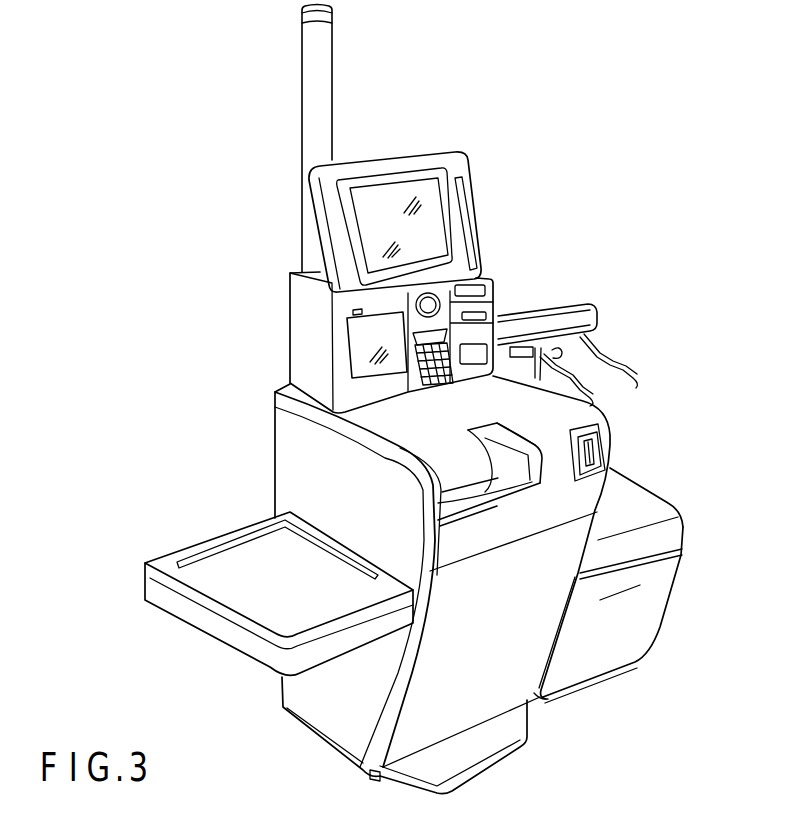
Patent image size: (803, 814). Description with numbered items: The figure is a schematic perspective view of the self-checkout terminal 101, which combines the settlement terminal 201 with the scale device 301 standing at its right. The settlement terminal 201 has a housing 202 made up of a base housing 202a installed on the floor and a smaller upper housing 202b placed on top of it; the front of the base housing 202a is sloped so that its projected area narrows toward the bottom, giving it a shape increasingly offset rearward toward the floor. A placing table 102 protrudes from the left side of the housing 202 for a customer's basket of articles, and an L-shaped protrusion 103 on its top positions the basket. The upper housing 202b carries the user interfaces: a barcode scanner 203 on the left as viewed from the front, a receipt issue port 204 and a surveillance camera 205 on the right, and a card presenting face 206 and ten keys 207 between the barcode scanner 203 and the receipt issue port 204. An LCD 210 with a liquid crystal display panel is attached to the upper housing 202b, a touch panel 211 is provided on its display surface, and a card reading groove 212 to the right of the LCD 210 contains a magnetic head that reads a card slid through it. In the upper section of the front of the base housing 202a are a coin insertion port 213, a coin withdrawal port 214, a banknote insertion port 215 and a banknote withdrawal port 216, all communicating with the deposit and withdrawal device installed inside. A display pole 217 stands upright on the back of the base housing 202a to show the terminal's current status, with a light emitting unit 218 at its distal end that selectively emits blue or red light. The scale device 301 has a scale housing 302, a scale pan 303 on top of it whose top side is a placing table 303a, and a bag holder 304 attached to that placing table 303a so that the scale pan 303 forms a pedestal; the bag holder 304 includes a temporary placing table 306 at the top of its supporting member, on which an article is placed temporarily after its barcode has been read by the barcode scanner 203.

The self-checkout terminal 101 is at (204, 158).
The placing table 102 is at (230, 590).
The L-shaped protrusion 103 is at (228, 543).
The settlement terminal 201 is at (247, 297).
The housing 202 is at (287, 434).
The base housing 202a is at (545, 700).
The upper housing 202b is at (297, 300).
The barcode scanner 203 is at (352, 340).
The receipt issue port 204 is at (487, 316).
The surveillance camera 205 is at (470, 290).
The card presenting face 206 is at (432, 300).
The ten keys 207 is at (413, 386).
The LCD 210 is at (378, 178).
The touch panel 211 is at (420, 188).
The card reading groove 212 is at (463, 188).
The coin insertion port 213 is at (508, 455).
The coin withdrawal port 214 is at (488, 488).
The banknote insertion port 215 is at (594, 450).
The banknote withdrawal port 216 is at (683, 537).
The display pole 217 is at (313, 93).
The light emitting unit 218 is at (326, 14).
The scale device 301 is at (652, 476).
The scale housing 302 is at (655, 603).
The scale pan 303 is at (662, 504).
The placing table 303a is at (656, 498).
The bag holder 304 is at (618, 308).
The temporary placing table 306 is at (570, 312).